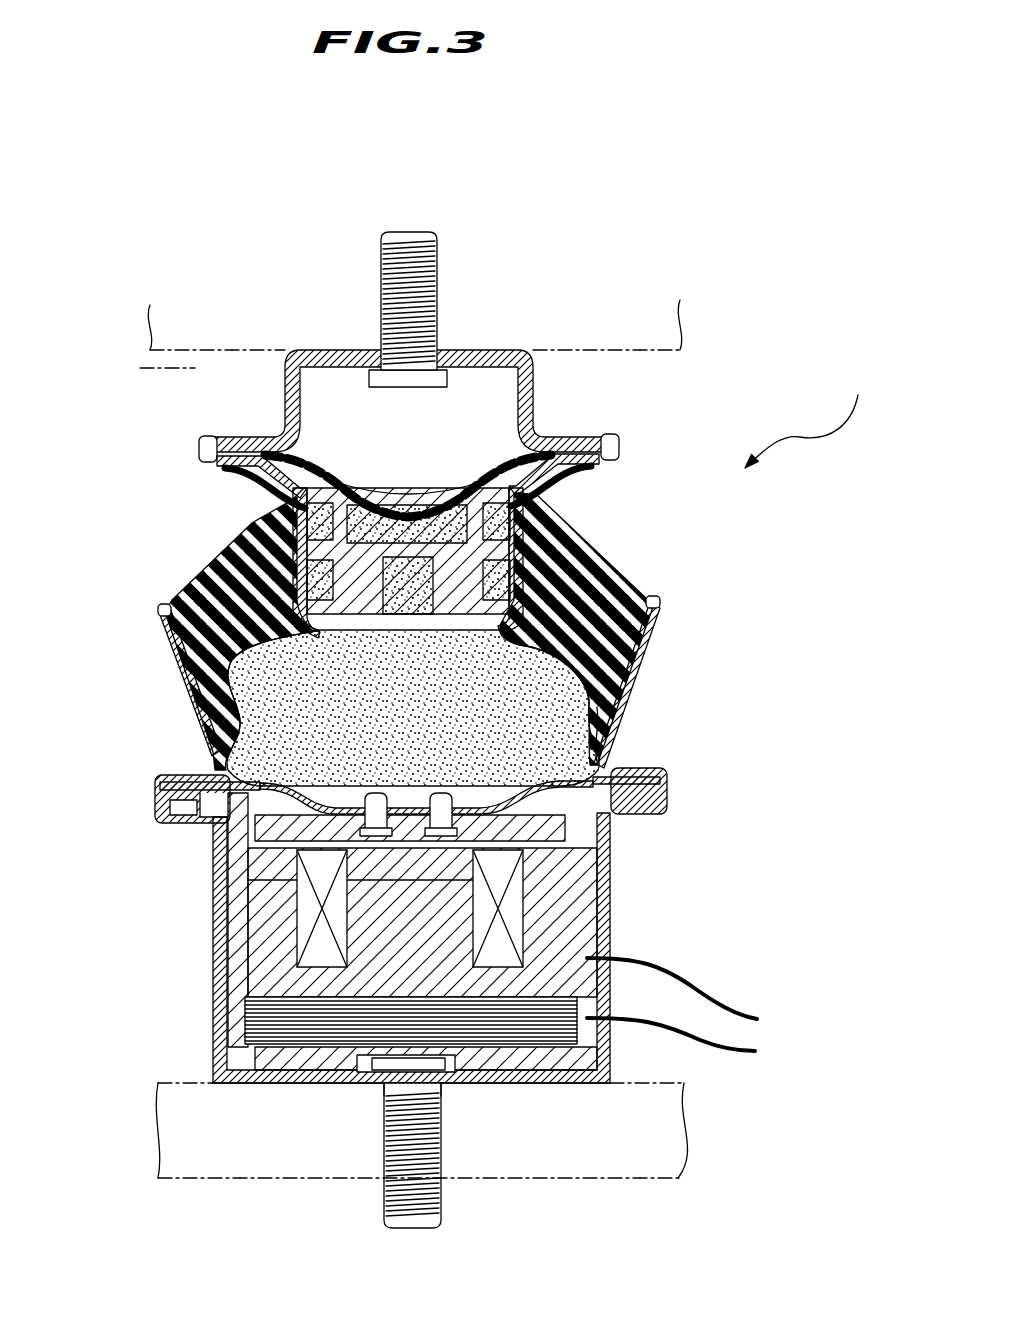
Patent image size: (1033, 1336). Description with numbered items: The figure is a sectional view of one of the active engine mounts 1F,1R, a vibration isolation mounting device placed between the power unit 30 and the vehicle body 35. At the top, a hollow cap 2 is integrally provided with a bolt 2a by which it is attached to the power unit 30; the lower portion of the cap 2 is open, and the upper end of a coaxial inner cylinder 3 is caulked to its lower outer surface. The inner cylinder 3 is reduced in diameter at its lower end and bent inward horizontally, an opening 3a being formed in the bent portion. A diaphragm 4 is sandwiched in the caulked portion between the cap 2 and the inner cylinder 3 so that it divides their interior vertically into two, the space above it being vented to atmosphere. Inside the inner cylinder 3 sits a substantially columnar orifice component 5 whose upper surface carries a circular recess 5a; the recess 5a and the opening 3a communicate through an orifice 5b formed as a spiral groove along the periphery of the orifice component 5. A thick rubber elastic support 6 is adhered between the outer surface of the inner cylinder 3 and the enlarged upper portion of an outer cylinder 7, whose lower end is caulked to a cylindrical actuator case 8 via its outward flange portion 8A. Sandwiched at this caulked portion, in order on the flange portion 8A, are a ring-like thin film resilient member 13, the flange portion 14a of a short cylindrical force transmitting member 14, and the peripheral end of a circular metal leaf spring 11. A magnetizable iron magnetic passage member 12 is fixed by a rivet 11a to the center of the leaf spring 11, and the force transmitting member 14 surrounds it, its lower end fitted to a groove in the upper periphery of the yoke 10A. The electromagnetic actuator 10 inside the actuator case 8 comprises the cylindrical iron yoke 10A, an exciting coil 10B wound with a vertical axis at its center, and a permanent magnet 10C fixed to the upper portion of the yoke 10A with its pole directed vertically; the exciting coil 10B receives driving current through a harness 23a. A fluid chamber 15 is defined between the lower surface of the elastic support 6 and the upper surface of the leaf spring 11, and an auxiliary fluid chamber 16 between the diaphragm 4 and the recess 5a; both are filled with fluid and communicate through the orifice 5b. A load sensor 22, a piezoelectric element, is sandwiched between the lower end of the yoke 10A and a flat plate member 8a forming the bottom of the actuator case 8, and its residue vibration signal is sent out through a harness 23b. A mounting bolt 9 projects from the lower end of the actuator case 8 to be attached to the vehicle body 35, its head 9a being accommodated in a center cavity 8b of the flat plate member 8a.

The active engine mounts 1F,1R is at (473, 734).
The cap 2 is at (475, 352).
The bolt 2a is at (442, 252).
The inner cylinder 3 is at (610, 436).
The opening 3a is at (540, 550).
The diaphragm 4 is at (330, 490).
The orifice component 5 is at (353, 580).
The recess 5a is at (447, 507).
The orifice 5b is at (305, 545).
The elastic support 6 is at (620, 587).
The outer cylinder 7 is at (615, 672).
The actuator case 8 is at (372, 938).
The flange portion 8A is at (190, 813).
The flat plate member 8a is at (250, 1087).
The center cavity 8b is at (373, 1086).
The mounting bolt 9 is at (434, 1161).
The head 9a is at (390, 1100).
The electromagnetic actuator 10 is at (316, 946).
The yoke 10A is at (300, 930).
The exciting coil 10B is at (320, 965).
The permanent magnet 10C is at (250, 1005).
The leaf spring 11 is at (612, 775).
The rivet 11a is at (543, 812).
The magnetic passage member 12 is at (662, 808).
The thin film resilient member 13 is at (160, 795).
The force transmitting member 14 is at (213, 770).
The flange portion 14a is at (215, 788).
The fluid chamber 15 is at (215, 695).
The auxiliary fluid chamber 16 is at (403, 510).
The load sensor 22 is at (537, 1084).
The harness 23a is at (693, 980).
The harness 23b is at (647, 1023).
The power unit 30 is at (190, 368).
The vehicle body 35 is at (223, 1173).